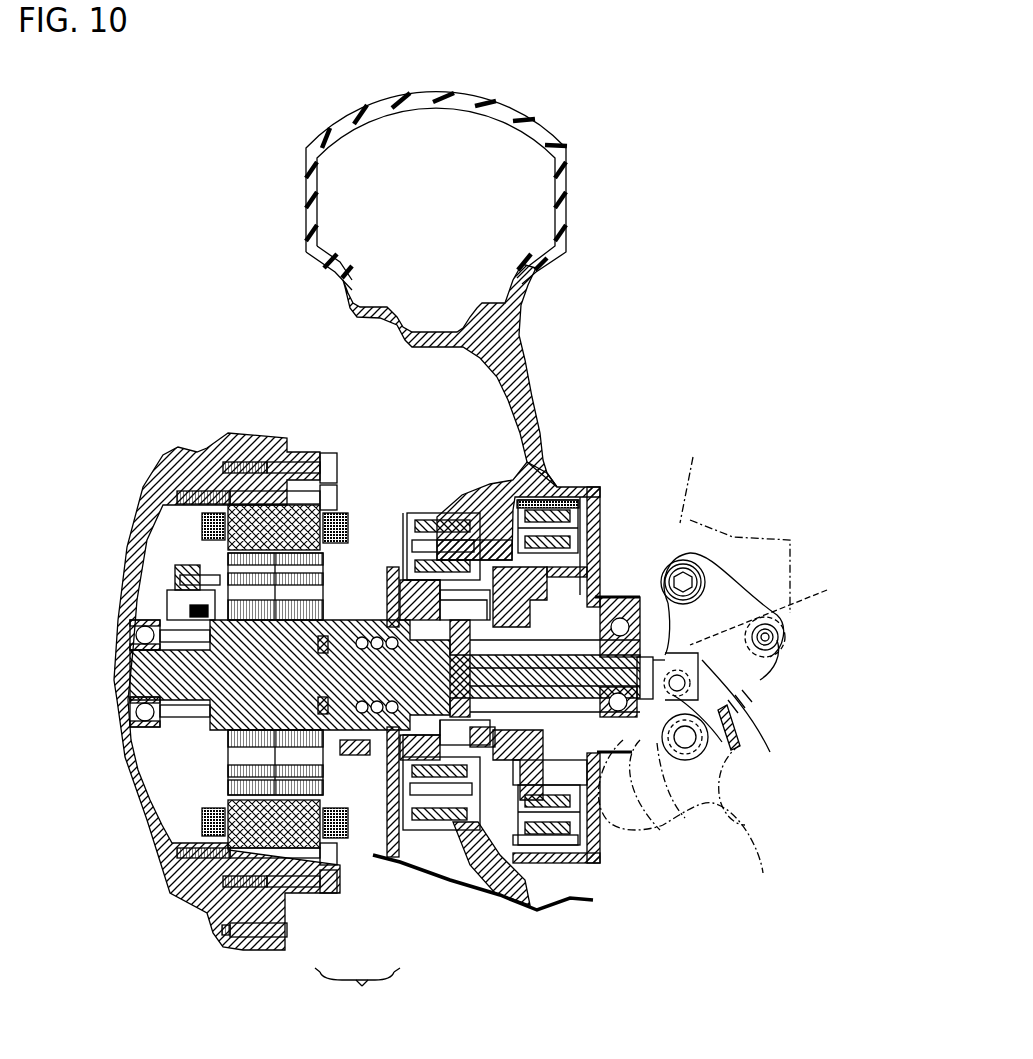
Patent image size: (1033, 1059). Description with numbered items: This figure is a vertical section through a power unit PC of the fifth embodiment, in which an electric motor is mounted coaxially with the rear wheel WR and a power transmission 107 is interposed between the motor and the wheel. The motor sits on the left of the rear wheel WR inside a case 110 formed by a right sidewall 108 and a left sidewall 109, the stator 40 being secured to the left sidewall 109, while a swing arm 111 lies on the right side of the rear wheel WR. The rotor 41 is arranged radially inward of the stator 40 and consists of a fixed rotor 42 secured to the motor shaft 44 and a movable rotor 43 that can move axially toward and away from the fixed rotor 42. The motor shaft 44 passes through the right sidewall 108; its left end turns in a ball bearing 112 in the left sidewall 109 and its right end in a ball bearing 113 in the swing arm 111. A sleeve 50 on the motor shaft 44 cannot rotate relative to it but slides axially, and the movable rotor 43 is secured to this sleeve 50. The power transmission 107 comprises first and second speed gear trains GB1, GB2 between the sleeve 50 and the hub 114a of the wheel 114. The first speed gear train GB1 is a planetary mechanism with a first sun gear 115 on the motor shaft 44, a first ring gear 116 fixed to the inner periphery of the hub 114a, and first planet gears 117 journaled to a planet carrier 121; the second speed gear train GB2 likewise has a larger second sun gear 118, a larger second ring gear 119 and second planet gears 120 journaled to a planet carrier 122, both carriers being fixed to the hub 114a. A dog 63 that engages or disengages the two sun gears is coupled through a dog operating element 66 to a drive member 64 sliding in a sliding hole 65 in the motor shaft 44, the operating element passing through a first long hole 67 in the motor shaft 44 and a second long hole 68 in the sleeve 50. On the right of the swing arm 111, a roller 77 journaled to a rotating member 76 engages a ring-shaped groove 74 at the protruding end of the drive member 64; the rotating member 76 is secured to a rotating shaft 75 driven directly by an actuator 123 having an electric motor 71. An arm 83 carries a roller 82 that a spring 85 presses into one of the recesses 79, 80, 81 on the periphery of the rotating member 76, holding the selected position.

The rear wheel WR is at (478, 103).
The wheel 114 is at (530, 423).
The hub 114a is at (487, 488).
The planet carrier 121 is at (455, 515).
The planet carrier 122 is at (538, 470).
The second planet gears 120 is at (548, 492).
The power transmission 107 is at (597, 528).
The fixed rotor 42 is at (172, 900).
The stator 40 is at (300, 490).
The rotor 41 is at (330, 578).
The movable rotor 43 is at (322, 785).
The motor shaft 44 is at (345, 650).
The dog operating element 66 is at (455, 652).
The arm 83 is at (178, 567).
The ball bearing 112 is at (146, 730).
The right sidewall 108 is at (392, 860).
The power unit PC is at (402, 556).
The first planet gears 117 is at (425, 515).
The first speed gear train GB1 is at (452, 800).
The first ring gear 116 is at (480, 840).
The second sun gear 118 is at (525, 840).
The second ring gear 119 is at (560, 845).
The dog 63 is at (470, 607).
The second long hole 68 is at (450, 640).
The first long hole 67 is at (520, 735).
The sleeve 50 is at (588, 655).
The drive member 64 is at (602, 612).
The rotating member 76 is at (725, 600).
The rotating shaft 75 is at (686, 575).
The roller 82 is at (787, 635).
The recess 79 is at (775, 648).
The recess 80 is at (767, 687).
The sliding hole 65 is at (690, 665).
The ring-shaped groove 74 is at (771, 582).
The actuator 123 is at (694, 457).
The roller 77 is at (688, 750).
The recess 81 is at (742, 715).
The spring 85 is at (742, 780).
The electric motor 71 is at (690, 816).
The swing arm 111 is at (682, 807).
The ball bearing 113 is at (687, 800).
The second speed gear train GB2 is at (580, 885).
The left sidewall 109 is at (275, 913).
The case 110 is at (357, 988).
The first sun gear 115 is at (386, 745).